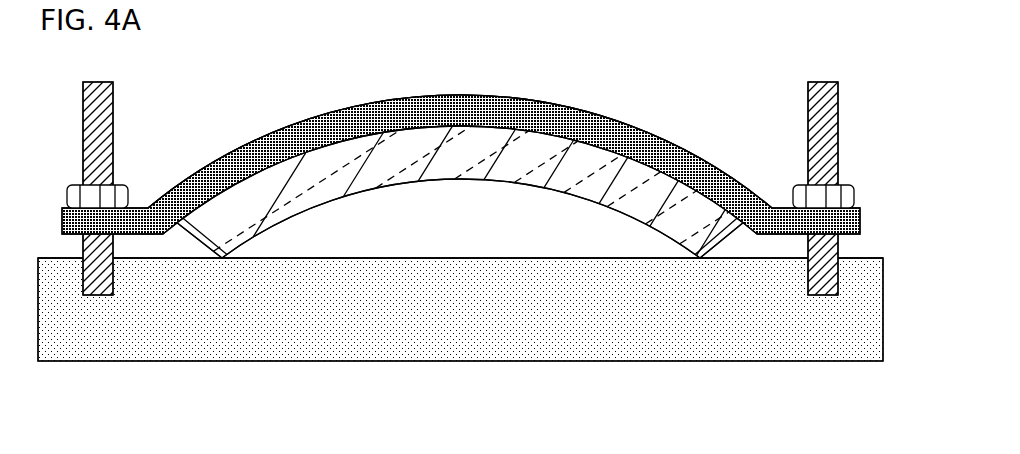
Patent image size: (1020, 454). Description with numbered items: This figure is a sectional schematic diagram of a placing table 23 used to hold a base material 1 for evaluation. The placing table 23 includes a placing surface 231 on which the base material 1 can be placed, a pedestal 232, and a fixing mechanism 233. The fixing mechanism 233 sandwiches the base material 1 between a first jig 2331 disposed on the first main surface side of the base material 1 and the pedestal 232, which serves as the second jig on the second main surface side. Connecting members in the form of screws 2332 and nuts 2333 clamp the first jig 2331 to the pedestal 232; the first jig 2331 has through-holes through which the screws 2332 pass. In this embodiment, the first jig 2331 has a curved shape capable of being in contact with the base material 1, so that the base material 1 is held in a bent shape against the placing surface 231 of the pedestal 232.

The base material 1 is at (543, 186).
The placing table 23 is at (460, 225).
The placing surface 231 is at (410, 258).
The pedestal 232 is at (727, 318).
The fixing mechanism 233 is at (545, 101).
The first jig 2331 is at (290, 131).
The screw 2332 is at (817, 109).
The nut 2333 is at (148, 173).